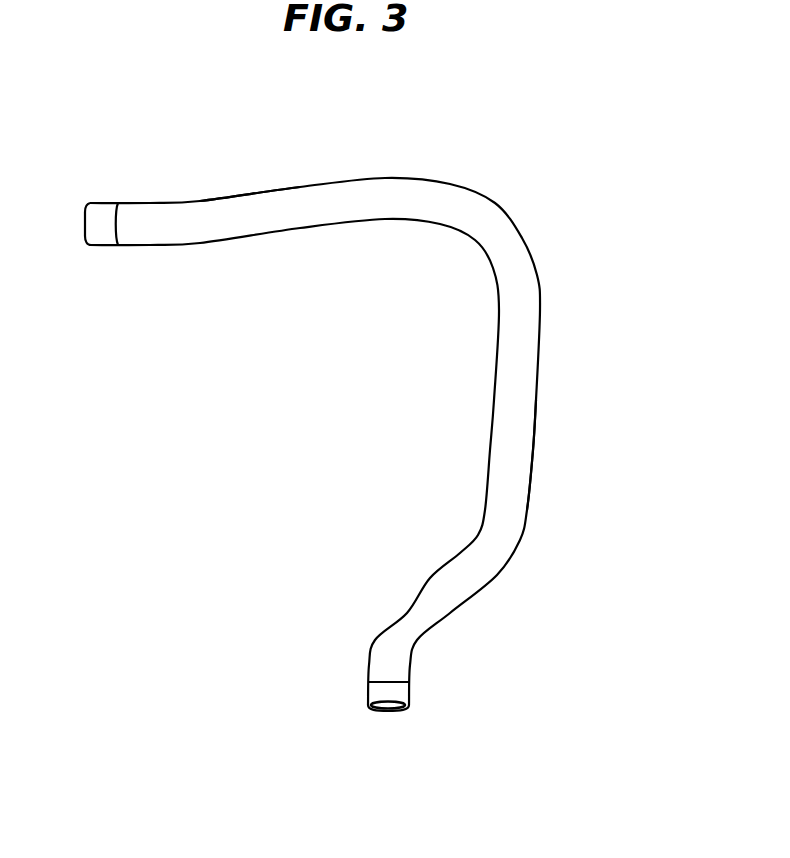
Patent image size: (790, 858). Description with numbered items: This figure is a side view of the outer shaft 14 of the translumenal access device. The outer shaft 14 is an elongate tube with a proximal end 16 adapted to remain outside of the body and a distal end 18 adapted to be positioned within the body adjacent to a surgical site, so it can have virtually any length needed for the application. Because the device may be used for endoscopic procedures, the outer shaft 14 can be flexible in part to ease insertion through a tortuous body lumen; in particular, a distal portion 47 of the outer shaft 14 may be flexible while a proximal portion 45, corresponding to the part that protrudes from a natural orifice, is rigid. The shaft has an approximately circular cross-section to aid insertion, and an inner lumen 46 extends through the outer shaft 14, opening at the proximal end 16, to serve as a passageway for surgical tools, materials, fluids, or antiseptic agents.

The outer shaft 14 is at (577, 146).
The distal end 18 is at (91, 203).
The distal portion 47 is at (256, 162).
The proximal portion 45 is at (553, 568).
The proximal end 16 is at (408, 708).
The inner lumen 46 is at (388, 717).